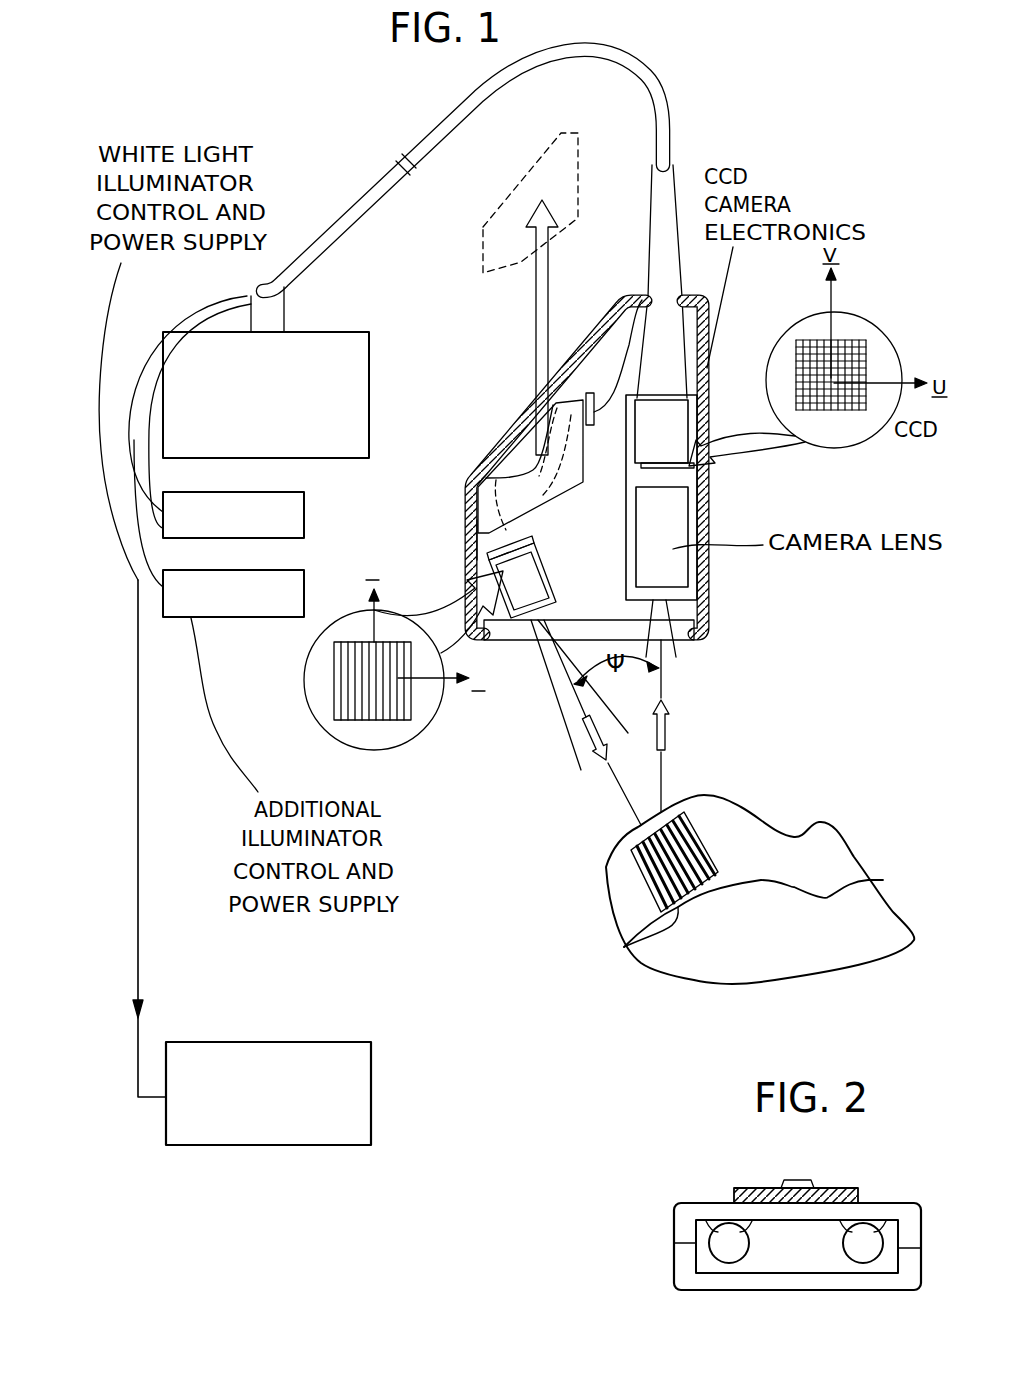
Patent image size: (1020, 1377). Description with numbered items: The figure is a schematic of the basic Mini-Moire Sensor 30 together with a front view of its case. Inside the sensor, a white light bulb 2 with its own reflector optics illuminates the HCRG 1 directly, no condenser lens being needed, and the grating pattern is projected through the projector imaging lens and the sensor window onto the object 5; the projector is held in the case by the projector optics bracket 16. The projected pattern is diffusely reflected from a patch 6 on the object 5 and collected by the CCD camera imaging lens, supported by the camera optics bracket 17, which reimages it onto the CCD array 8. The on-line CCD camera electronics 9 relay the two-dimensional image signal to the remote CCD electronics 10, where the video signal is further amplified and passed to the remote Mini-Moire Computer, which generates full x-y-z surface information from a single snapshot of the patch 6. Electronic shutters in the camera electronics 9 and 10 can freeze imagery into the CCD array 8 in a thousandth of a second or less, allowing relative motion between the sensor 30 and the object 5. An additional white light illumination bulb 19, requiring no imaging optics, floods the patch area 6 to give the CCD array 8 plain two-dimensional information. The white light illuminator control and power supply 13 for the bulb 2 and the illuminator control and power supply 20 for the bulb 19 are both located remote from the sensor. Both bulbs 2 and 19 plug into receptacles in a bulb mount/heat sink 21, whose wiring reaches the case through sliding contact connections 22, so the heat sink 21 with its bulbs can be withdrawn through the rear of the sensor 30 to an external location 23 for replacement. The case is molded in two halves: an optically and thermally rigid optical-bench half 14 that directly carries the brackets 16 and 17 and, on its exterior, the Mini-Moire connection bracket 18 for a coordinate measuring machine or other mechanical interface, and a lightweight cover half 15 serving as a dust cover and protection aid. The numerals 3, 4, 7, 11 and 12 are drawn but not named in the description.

In FIG. 1, the HCRG 1 is at (490, 548).
In FIG. 1, the white light bulb 2 is at (474, 537).
In FIG. 1, the projector 3 is at (524, 600).
In FIG. 1, the projected light beam 4 is at (533, 648).
In FIG. 1, the object 5 is at (615, 888).
In FIG. 1, the patch 6 is at (627, 943).
In FIG. 1, the camera lens 7 is at (673, 522).
In FIG. 1, the CCD array 8 is at (702, 470).
In FIG. 1, the CCD camera electronics 9 is at (670, 423).
In FIG. 1, the remote CCD electronics 10 is at (360, 381).
In FIG. 1, the cable to computer 11 is at (137, 760).
In FIG. 1, the mini-moire computer 12 is at (268, 1053).
In FIG. 1, the white light illuminator control and power supply 13 is at (303, 510).
In FIG. 2, the optical-bench half 14 is at (887, 1203).
In FIG. 2, the cover half 15 is at (907, 1291).
In FIG. 1, the projector optics bracket 16 is at (476, 634).
In FIG. 1, the camera optics bracket 17 is at (693, 575).
In FIG. 2, the Mini-Moire connection bracket 18 is at (845, 1188).
In FIG. 1, the additional white light illumination bulb 19 is at (530, 473).
In FIG. 1, the illuminator control and power supply 20 is at (303, 585).
In FIG. 1, the bulb mount/heat sink 21 is at (533, 468).
In FIG. 1, the sliding contact connections 22 is at (578, 400).
In FIG. 1, the external location 23 is at (530, 294).
In FIG. 1, the Mini-Moire Sensor 30 is at (716, 638).
In FIG. 2, the Mini-Moire Sensor 30 is at (713, 1290).